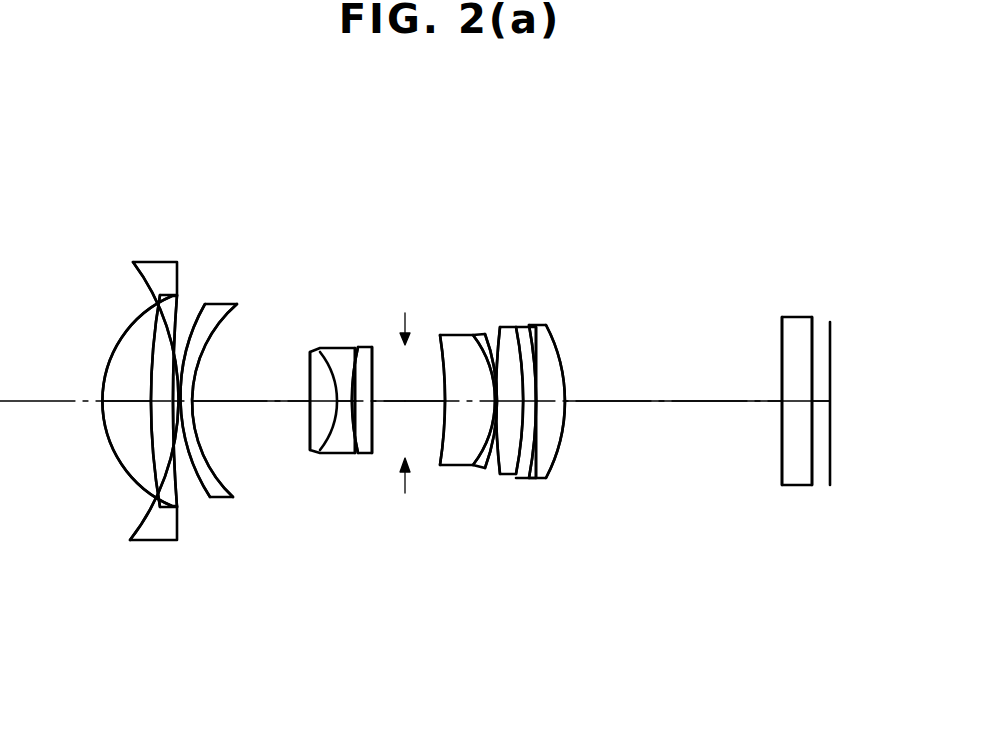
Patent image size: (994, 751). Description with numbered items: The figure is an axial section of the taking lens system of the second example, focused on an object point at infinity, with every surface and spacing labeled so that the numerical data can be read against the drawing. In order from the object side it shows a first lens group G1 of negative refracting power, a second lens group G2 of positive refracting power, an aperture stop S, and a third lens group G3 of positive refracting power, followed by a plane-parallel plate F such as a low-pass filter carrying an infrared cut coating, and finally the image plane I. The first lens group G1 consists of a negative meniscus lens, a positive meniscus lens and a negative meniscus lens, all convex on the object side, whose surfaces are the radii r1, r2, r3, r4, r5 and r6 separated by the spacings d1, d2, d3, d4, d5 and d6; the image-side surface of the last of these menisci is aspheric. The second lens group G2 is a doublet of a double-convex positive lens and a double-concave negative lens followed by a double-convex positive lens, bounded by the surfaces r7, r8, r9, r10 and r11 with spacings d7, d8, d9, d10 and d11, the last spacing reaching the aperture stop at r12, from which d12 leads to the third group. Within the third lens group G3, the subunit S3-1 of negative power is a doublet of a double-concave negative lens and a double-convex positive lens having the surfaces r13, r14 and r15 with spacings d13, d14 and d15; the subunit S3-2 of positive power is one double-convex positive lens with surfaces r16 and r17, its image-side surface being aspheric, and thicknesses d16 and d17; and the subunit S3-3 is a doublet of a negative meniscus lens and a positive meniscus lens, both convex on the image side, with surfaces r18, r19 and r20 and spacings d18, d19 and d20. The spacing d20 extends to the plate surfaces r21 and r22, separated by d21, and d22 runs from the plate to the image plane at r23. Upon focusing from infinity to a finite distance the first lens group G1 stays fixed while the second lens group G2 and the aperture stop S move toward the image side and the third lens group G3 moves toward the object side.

The first lens group G1 is at (233, 152).
The second lens group G2 is at (372, 152).
The third lens group G3 is at (565, 152).
The aperture stop S is at (410, 152).
The subunit of negative refracting power S3-1 is at (485, 217).
The subunit of positive refracting power S3-2 is at (522, 217).
The subunit composed of a negative lens and a positive lens S3-3 is at (565, 217).
The plane-parallel plate F is at (778, 408).
The image plane I is at (863, 374).
The radius of curvature of lens surface r1 is at (112, 292).
The radius of curvature of lens surface r2 is at (142, 302).
The radius of curvature of lens surface r3 is at (160, 294).
The radius of curvature of lens surface r4 is at (182, 298).
The radius of curvature of lens surface r5 is at (200, 316).
The radius of curvature of lens surface r6 is at (222, 333).
The radius of curvature of lens surface r7 is at (307, 365).
The radius of curvature of lens surface r8 is at (331, 362).
The radius of curvature of lens surface r9 is at (346, 348).
The radius of curvature of lens surface r10 is at (361, 346).
The radius of curvature of lens surface r11 is at (374, 346).
The radius of curvature of lens surface r12 is at (405, 322).
The radius of curvature of lens surface r13 is at (441, 348).
The radius of curvature of lens surface r14 is at (480, 345).
The radius of curvature of lens surface r15 is at (488, 340).
The radius of curvature of lens surface r16 is at (500, 335).
The radius of curvature of lens surface r17 is at (516, 330).
The radius of curvature of lens surface r18 is at (535, 330).
The radius of curvature of lens surface r19 is at (540, 325).
The radius of curvature of lens surface r20 is at (560, 342).
The radius of curvature of lens surface r21 is at (782, 333).
The radius of curvature of lens surface r22 is at (803, 367).
The radius of curvature of lens surface r23 is at (830, 335).
The spacing between adjacent lens surfaces d1 is at (96, 412).
The spacing between adjacent lens surfaces d2 is at (126, 420).
The spacing between adjacent lens surfaces d3 is at (166, 403).
The spacing between adjacent lens surfaces d4 is at (176, 404).
The spacing between adjacent lens surfaces d5 is at (186, 404).
The spacing between adjacent lens surfaces d6 is at (251, 420).
The spacing between adjacent lens surfaces d7 is at (325, 405).
The spacing between adjacent lens surfaces d8 is at (345, 405).
The spacing between adjacent lens surfaces d9 is at (354, 405).
The spacing between adjacent lens surfaces d10 is at (363, 405).
The spacing between adjacent lens surfaces d11 is at (397, 421).
The spacing between adjacent lens surfaces d12 is at (428, 421).
The spacing between adjacent lens surfaces d13 is at (443, 405).
The spacing between adjacent lens surfaces d14 is at (486, 405).
The spacing between adjacent lens surfaces d15 is at (496, 405).
The spacing between adjacent lens surfaces d16 is at (509, 405).
The spacing between adjacent lens surfaces d17 is at (529, 405).
The spacing between adjacent lens surfaces d18 is at (539, 405).
The spacing between adjacent lens surfaces d19 is at (557, 405).
The spacing between adjacent lens surfaces d20 is at (673, 422).
The spacing between adjacent lens surfaces d21 is at (797, 403).
The spacing between adjacent lens surfaces d22 is at (820, 403).